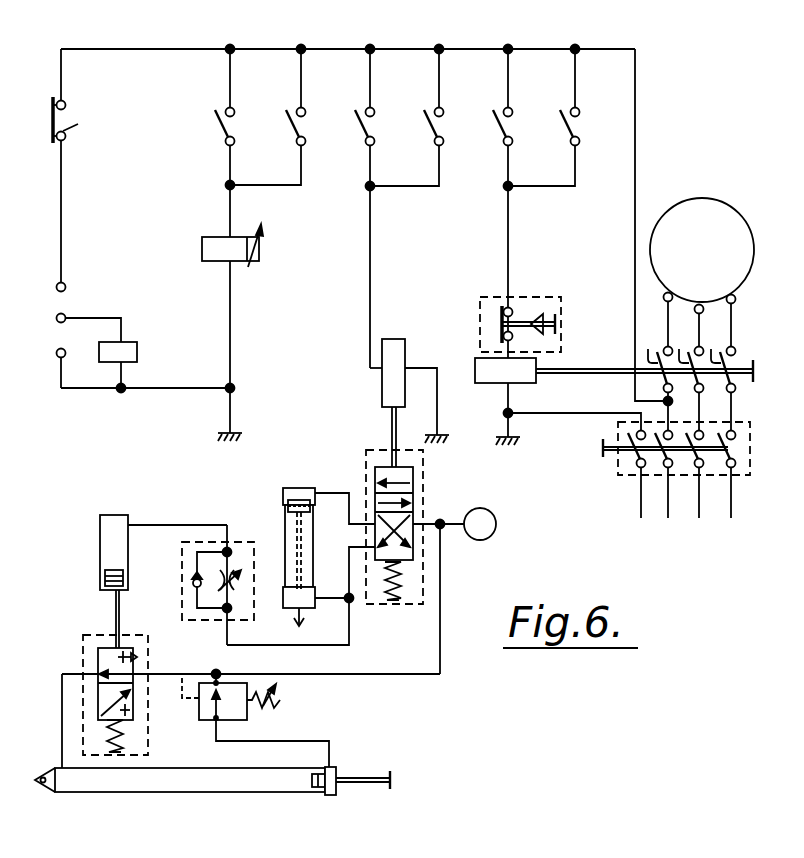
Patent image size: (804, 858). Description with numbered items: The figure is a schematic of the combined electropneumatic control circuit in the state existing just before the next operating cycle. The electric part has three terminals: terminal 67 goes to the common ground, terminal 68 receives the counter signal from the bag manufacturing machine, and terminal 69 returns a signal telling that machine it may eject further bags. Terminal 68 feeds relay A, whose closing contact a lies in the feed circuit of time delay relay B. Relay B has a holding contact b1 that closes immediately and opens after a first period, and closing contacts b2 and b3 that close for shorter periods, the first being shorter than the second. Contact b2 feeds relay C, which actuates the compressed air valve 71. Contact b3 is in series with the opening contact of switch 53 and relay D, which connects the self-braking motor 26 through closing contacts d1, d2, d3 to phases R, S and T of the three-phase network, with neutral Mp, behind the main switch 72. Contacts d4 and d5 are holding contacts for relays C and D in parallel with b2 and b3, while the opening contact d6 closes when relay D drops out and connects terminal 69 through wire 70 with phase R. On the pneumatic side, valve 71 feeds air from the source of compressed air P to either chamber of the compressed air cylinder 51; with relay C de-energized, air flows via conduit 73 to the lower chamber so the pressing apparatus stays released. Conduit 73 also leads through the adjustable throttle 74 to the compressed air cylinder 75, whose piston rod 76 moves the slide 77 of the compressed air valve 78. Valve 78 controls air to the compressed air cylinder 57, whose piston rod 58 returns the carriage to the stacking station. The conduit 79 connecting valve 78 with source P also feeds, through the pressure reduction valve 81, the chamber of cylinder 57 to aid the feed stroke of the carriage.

The wire 70 is at (327, 48).
The self-braking motor 26 is at (699, 210).
The switch 53 is at (541, 300).
The compressed air cylinder 51 is at (294, 488).
The adjustable throttle 74 is at (244, 541).
The compressed air valve 71 is at (420, 509).
The conduit 73 is at (347, 572).
The compressed air cylinder 75 is at (110, 543).
The piston rod 76 is at (114, 606).
The slide 77 is at (98, 657).
The compressed air valve 78 is at (150, 668).
The pressure reduction valve 81 is at (238, 716).
The conduit 79 is at (332, 678).
The compressed air cylinder 57 is at (193, 778).
The piston rod 58 is at (362, 785).
The main switch 72 is at (625, 478).
The terminal 69 is at (57, 290).
The terminal 68 is at (57, 321).
The terminal 67 is at (57, 356).
The closing contact a is at (216, 127).
The closing contact b1 is at (288, 127).
The closing contact b2 is at (358, 127).
The closing contact b3 is at (496, 127).
The closing contact d1 is at (655, 359).
The closing contact d2 is at (687, 359).
The closing contact d3 is at (719, 359).
The closing contact d4 is at (427, 127).
The closing contact d5 is at (563, 129).
The opening contact d6 is at (82, 120).
The relay A is at (138, 355).
The time delay relay B is at (202, 250).
The relay C is at (382, 386).
The relay D is at (490, 381).
The source of compressed air P is at (480, 524).
The neutral conductor Mp is at (640, 510).
The phase R is at (667, 508).
The phase S is at (698, 508).
The phase T is at (731, 508).